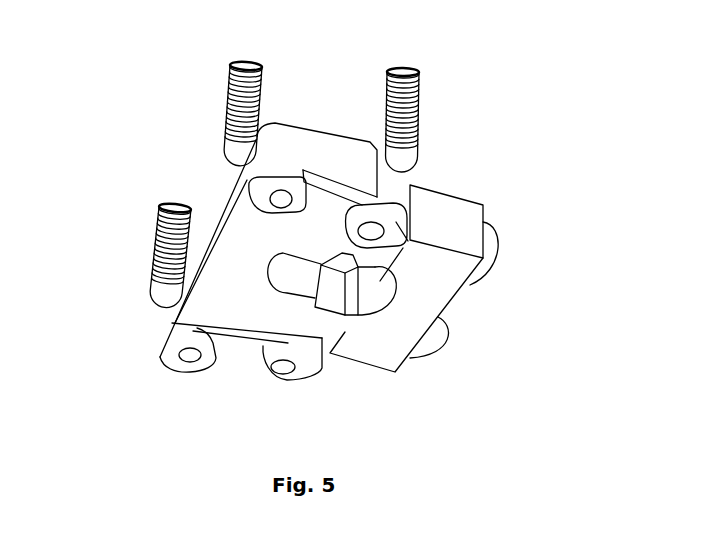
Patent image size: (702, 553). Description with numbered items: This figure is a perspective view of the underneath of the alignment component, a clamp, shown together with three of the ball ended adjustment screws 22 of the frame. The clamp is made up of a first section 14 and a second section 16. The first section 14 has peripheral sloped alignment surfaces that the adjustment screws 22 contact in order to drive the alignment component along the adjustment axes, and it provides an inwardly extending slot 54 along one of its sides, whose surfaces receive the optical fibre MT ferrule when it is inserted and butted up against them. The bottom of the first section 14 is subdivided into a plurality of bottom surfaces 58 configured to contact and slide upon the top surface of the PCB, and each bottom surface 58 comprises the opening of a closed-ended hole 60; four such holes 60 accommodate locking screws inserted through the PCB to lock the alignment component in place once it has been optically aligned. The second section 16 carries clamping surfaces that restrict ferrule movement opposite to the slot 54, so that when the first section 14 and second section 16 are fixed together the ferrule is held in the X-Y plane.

The first section 14 is at (323, 140).
The second section 16 is at (462, 195).
The adjustment screws 22 is at (228, 88).
The slot 54 is at (334, 310).
The bottom surface 58 is at (302, 230).
The closed-ended holes 60 is at (267, 198).